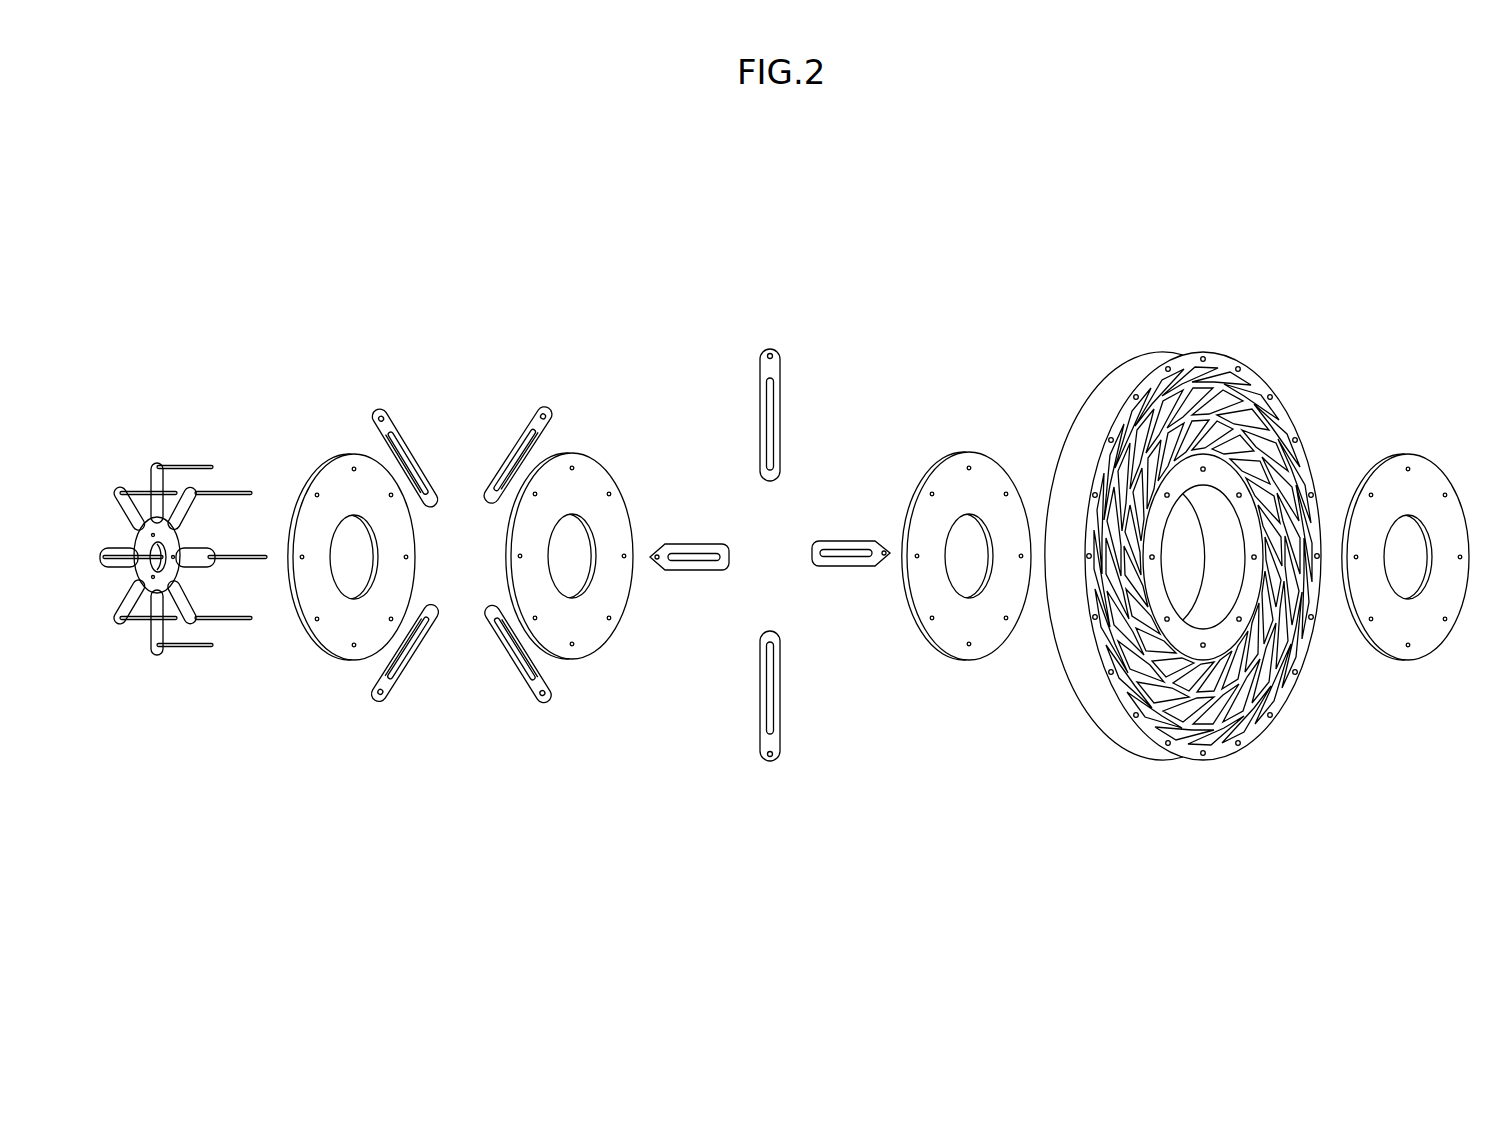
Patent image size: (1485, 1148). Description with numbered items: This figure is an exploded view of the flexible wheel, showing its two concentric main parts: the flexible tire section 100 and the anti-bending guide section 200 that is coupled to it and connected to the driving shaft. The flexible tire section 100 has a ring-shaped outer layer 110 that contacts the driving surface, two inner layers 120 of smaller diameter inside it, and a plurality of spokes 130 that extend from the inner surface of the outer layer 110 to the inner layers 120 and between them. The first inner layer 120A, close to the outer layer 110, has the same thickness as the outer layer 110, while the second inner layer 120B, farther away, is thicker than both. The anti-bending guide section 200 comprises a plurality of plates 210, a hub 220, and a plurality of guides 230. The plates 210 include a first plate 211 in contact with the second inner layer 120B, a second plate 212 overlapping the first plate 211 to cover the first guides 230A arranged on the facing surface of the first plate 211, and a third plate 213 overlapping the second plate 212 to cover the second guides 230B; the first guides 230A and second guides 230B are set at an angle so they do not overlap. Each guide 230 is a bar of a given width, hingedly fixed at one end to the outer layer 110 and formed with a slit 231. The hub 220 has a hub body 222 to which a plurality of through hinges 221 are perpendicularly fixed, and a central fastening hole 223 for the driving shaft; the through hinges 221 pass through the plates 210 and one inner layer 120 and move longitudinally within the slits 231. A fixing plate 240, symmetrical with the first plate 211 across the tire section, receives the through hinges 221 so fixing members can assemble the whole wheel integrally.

The flexible tire section 100 is at (1415, 300).
The outer layer 110 is at (1247, 371).
The inner layers 120 is at (1220, 228).
The first inner layer 120A is at (1178, 473).
The second inner layer 120B is at (1197, 456).
The spokes 130 is at (1265, 530).
The anti-bending guide section 200 is at (304, 726).
The plates 210 is at (658, 885).
The first plate 211 is at (953, 633).
The second plate 212 is at (577, 655).
The third plate 213 is at (333, 638).
The hub 220 is at (245, 358).
The through hinges 221 is at (233, 492).
The hub body 222 is at (150, 517).
The fastening hole 223 is at (160, 546).
The guides 230 is at (610, 283).
The first guides 230A is at (693, 470).
The second guides 230B is at (465, 447).
The slit 231 is at (778, 420).
The fixing plate 240 is at (1425, 632).